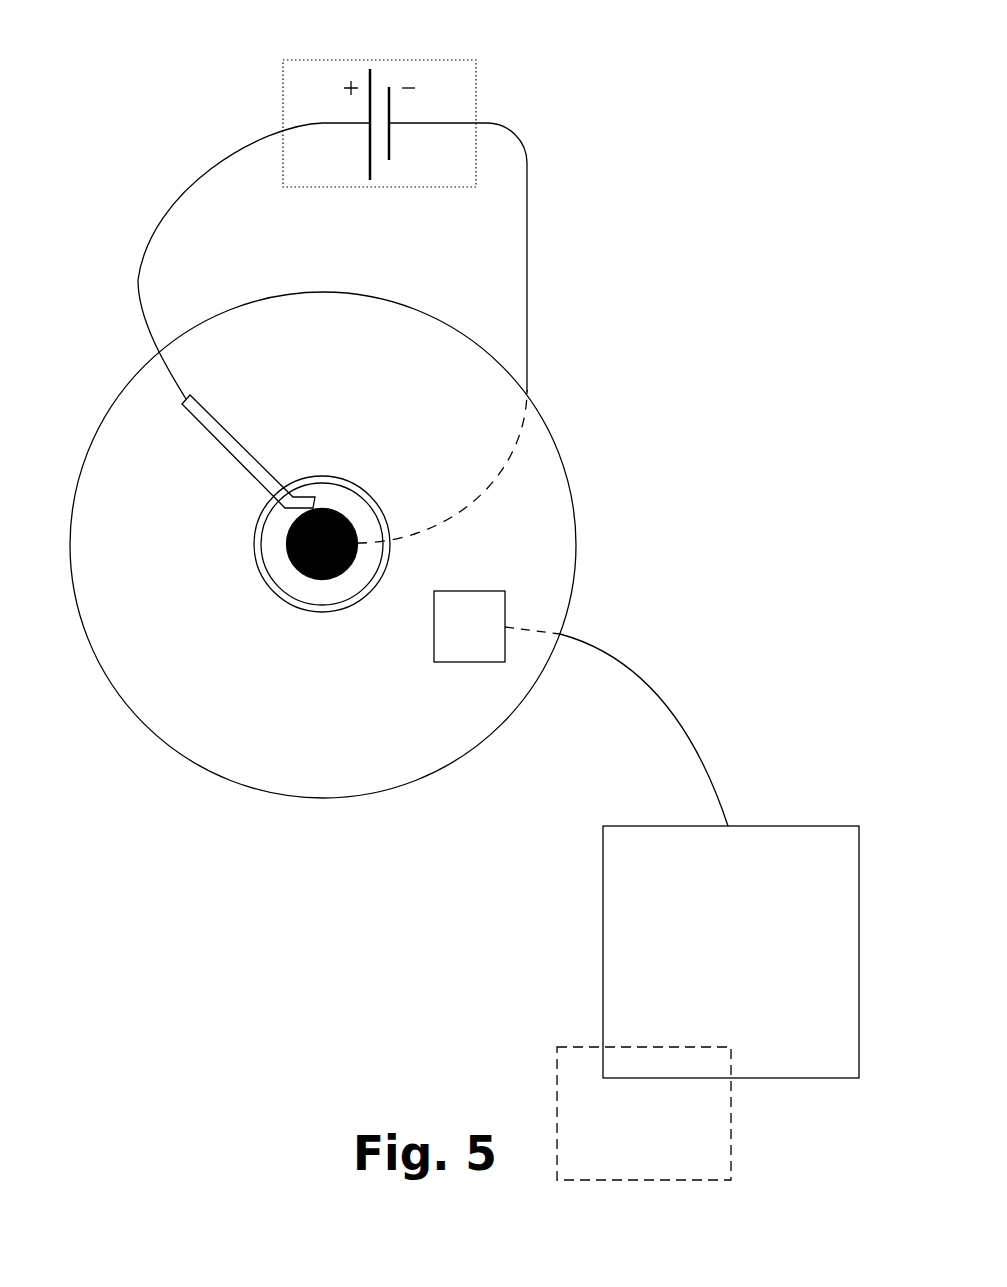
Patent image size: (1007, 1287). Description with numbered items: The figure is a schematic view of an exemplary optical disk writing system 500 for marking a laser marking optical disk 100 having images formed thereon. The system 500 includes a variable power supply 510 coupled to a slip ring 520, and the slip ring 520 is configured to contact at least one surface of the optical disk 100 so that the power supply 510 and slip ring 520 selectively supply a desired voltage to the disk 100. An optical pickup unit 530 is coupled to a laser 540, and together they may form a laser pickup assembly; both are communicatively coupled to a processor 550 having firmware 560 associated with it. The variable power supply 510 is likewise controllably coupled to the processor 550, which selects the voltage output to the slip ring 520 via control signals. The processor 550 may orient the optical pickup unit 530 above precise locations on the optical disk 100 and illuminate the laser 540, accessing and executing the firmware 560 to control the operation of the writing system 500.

The optical disk 100 is at (578, 543).
The optical disk writing system 500 is at (708, 72).
The variable power supply 510 is at (283, 60).
The slip ring 520 is at (186, 406).
The optical pickup unit 530 is at (505, 599).
The laser 540 is at (470, 662).
The processor 550 is at (712, 974).
The firmware 560 is at (625, 1136).